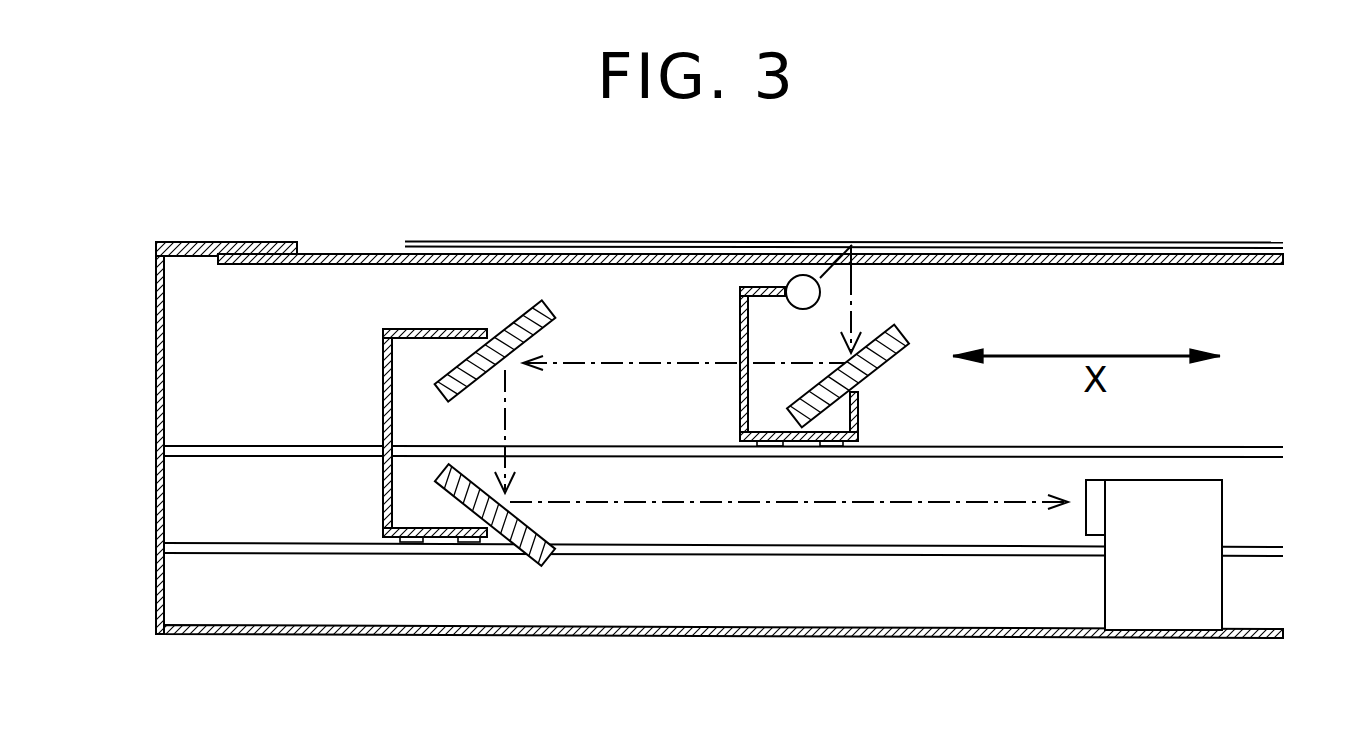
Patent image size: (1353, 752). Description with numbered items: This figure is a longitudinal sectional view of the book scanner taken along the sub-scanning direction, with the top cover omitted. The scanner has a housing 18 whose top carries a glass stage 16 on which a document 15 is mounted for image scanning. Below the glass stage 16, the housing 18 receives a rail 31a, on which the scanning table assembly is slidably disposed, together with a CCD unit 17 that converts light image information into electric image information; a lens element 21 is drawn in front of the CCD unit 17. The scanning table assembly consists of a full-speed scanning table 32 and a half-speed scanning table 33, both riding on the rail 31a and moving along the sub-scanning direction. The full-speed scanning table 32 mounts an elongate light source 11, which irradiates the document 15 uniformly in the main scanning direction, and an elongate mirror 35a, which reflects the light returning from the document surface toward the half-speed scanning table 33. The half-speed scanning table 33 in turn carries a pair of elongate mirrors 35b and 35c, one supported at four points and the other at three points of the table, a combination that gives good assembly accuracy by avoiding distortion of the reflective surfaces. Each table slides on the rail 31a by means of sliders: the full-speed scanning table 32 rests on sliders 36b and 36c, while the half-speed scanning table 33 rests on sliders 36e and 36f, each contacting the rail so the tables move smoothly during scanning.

The light source 11 is at (806, 276).
The document 15 is at (1043, 240).
The glass stage 16 is at (1252, 267).
The CCD unit 17 is at (1168, 607).
The housing 18 is at (225, 635).
The imaging lens 21 is at (952, 505).
The rail 31a is at (200, 498).
The full-speed scanning table 32 is at (745, 288).
The half-speed scanning table 33 is at (383, 358).
The mirror 35a is at (893, 324).
The mirror 35b is at (527, 312).
The mirror 35c is at (547, 560).
The slider 36b is at (770, 447).
The slider 36c is at (832, 447).
The slider 36e is at (410, 542).
The slider 36f is at (466, 542).